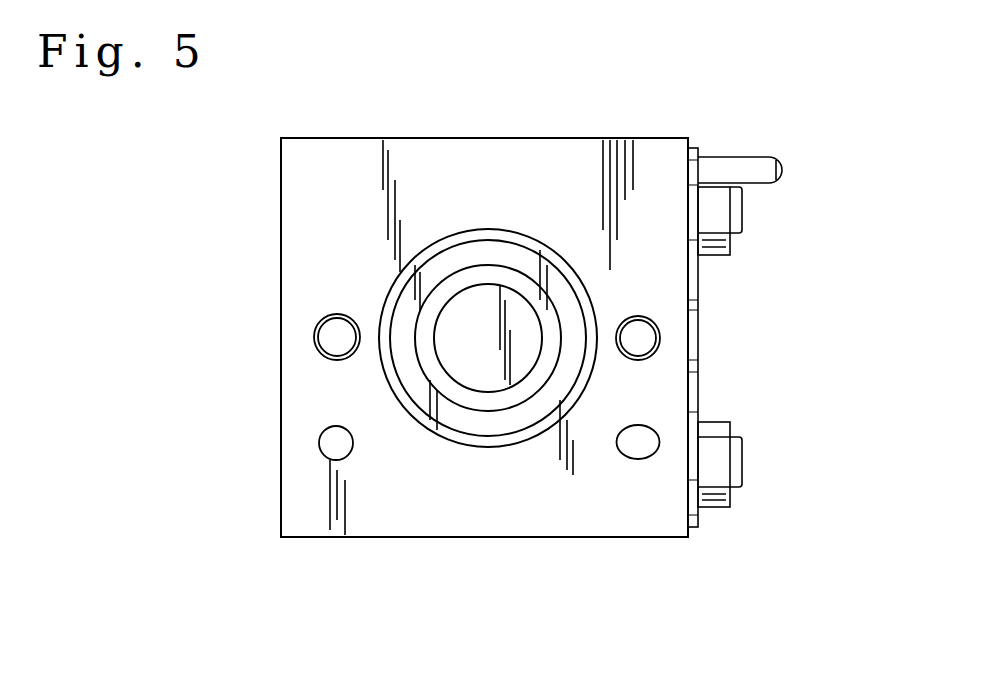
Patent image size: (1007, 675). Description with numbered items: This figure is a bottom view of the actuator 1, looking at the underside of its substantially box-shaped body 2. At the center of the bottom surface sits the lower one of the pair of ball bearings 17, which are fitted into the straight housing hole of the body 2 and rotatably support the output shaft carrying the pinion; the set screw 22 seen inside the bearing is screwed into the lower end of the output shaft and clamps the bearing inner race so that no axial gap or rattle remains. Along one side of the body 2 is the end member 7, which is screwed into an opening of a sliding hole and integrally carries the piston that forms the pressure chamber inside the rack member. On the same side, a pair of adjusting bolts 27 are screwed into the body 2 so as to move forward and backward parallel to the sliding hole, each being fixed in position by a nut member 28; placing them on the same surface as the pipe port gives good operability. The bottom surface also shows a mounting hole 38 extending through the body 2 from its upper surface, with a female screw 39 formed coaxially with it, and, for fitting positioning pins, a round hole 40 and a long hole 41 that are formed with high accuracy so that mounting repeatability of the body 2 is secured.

The actuator 1 is at (291, 116).
The body 2 is at (605, 138).
The end member 7 is at (693, 287).
The ball bearing 17 is at (503, 420).
The set screw 22 is at (478, 313).
The adjusting bolt 27 is at (737, 213).
The nut member 28 is at (718, 202).
The mounting hole 38 is at (334, 331).
The female screw 39 is at (329, 343).
The round hole 40 is at (332, 441).
The long hole 41 is at (636, 445).